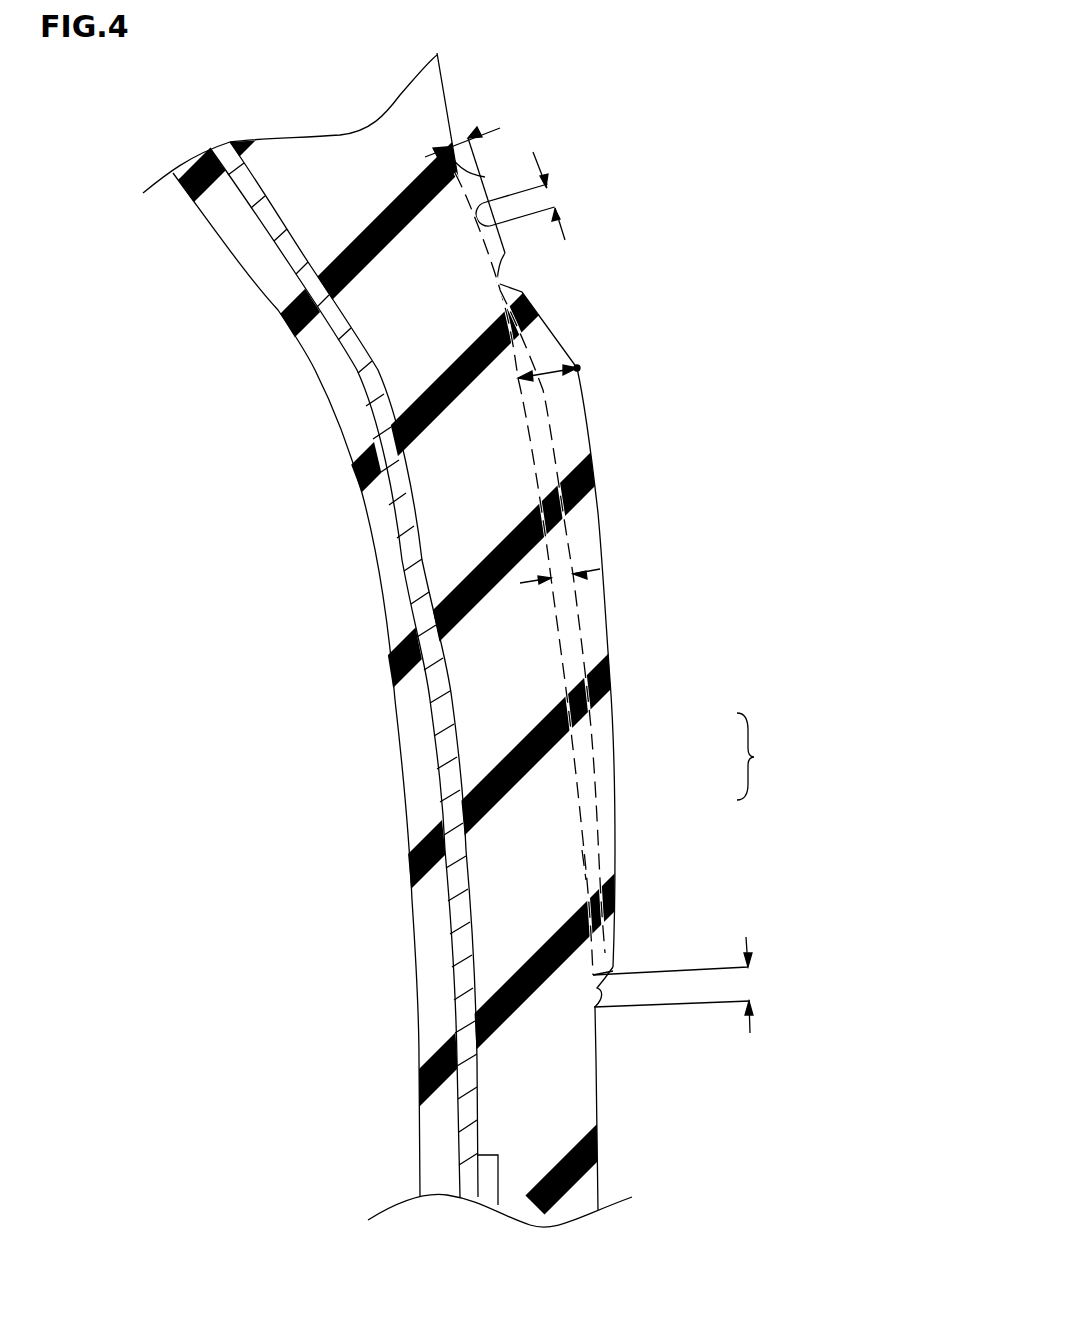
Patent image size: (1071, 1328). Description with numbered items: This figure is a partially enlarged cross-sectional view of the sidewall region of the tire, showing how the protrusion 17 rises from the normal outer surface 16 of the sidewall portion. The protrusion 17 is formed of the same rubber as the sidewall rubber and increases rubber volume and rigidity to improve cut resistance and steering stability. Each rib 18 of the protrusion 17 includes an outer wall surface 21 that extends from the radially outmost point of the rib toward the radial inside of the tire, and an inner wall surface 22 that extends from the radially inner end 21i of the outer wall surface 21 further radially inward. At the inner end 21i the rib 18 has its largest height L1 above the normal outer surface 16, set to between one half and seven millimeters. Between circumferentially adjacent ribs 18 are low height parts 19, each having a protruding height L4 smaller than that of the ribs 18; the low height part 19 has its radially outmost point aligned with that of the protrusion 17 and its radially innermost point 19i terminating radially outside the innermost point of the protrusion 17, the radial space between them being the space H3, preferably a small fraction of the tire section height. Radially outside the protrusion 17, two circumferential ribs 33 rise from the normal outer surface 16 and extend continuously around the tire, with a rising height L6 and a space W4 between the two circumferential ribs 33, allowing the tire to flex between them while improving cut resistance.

The circumferential rib 33 is at (614, 200).
The outer wall surface 21 is at (552, 336).
The radially inner end of outer wall surface 21i is at (578, 367).
The inner wall surface 22 is at (602, 513).
The rib 18 is at (616, 724).
The low height part 19 is at (594, 784).
The protrusion 17 is at (762, 756).
The normal outer surface 16 is at (583, 858).
The radially innermost point of low height part 19i is at (600, 978).
The rising height of circumferential ribs L6 is at (462, 137).
The space between circumferential ribs W4 is at (564, 196).
The largest height of rib L1 is at (556, 376).
The protruding height of low height part L4 is at (555, 580).
The space between innermost points of low height part and protrusion H3 is at (689, 985).